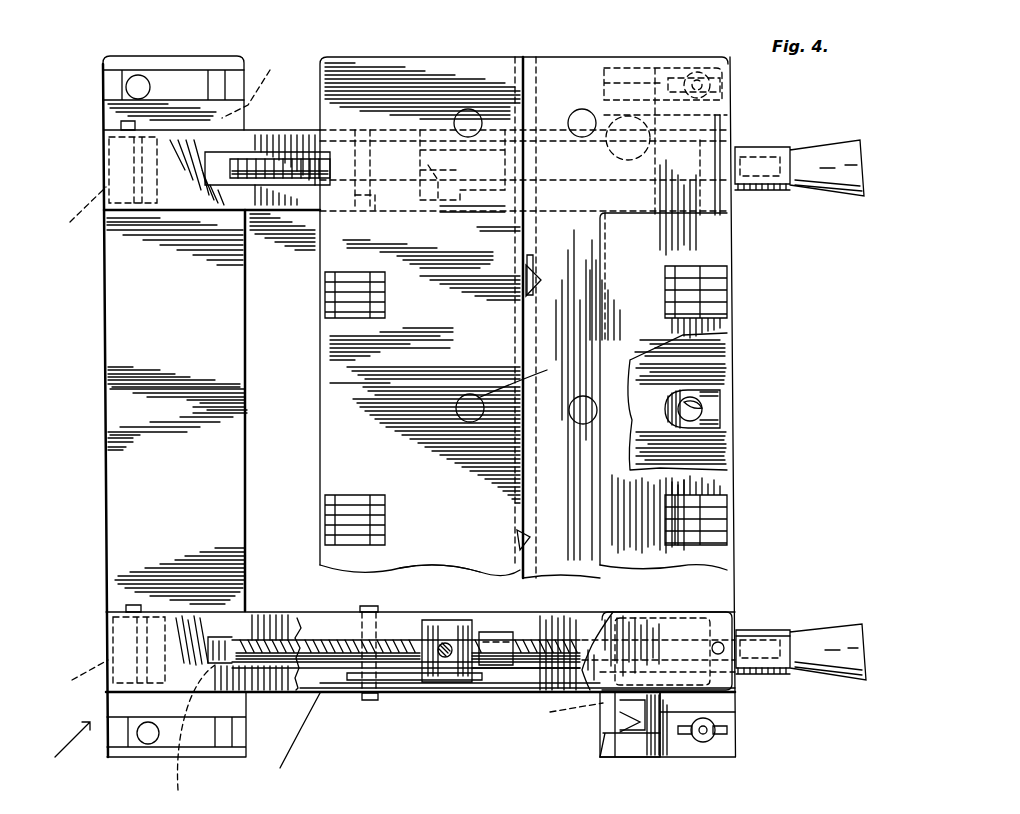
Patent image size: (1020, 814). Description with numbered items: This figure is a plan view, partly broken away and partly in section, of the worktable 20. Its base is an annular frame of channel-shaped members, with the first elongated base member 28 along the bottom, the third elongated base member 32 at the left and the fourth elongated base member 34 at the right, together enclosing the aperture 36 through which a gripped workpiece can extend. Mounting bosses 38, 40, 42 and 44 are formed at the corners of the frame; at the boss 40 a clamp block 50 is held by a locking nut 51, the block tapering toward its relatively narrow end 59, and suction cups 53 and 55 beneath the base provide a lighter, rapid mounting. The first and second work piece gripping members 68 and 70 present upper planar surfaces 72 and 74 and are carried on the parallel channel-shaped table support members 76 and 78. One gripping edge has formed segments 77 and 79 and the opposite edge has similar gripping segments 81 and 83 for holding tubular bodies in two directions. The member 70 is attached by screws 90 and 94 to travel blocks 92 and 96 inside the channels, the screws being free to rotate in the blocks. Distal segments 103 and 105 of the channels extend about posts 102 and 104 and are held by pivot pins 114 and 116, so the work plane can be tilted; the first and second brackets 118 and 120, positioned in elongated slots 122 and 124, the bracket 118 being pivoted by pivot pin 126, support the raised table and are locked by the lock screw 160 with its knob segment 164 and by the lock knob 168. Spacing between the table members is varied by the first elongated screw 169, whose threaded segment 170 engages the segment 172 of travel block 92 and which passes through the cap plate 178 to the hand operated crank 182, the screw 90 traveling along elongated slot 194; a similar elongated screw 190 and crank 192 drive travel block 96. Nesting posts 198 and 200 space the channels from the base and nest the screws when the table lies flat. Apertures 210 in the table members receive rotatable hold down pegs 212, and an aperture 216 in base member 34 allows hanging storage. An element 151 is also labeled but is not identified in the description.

The worktable 20 is at (62, 788).
The first elongated base member 28 is at (336, 700).
The third elongated base member 32 is at (118, 497).
The fourth elongated base member 34 is at (740, 467).
The enclosed aperture 36 is at (292, 376).
The mounting boss 38 is at (128, 757).
The mounting boss 40 is at (735, 757).
The mounting boss 42 is at (105, 57).
The mounting boss 44 is at (733, 57).
The clamp block 50 is at (690, 745).
The locking nut 51 is at (740, 733).
The suction cup 53 is at (672, 100).
The suction cup 55 is at (234, 425).
The narrow end 59 is at (602, 722).
The first work piece gripping member 68 is at (565, 57).
The second work piece gripping member 70 is at (410, 57).
The upper planar surface 72 is at (668, 282).
The upper planar surface 74 is at (440, 360).
The first table support member 76 is at (262, 612).
The formed segment 77 is at (508, 532).
The second table support member 78 is at (291, 135).
The formed segment 79 is at (500, 574).
The gripping segment 81 is at (538, 326).
The gripping segment 83 is at (540, 278).
The screw 90 is at (447, 643).
The travel block 92 is at (455, 682).
The screw 94 is at (438, 200).
The travel block 96 is at (460, 222).
The post 102 is at (73, 679).
The distal segment 103 is at (108, 637).
The post 104 is at (73, 209).
The distal segment 105 is at (106, 148).
The pivot pin 114 is at (128, 606).
The pivot pin 116 is at (123, 122).
The first bracket 118 is at (410, 681).
The second bracket 120 is at (402, 130).
The elongated slot 122 is at (368, 700).
The elongated slot 124 is at (340, 122).
The pivot pin 126 is at (368, 606).
The slot 151 is at (372, 214).
The lock screw 160 is at (610, 766).
The knob segment 164 is at (655, 758).
The lock knob 168 is at (662, 68).
The first elongated screw 169 is at (294, 738).
The threaded segment 170 is at (312, 640).
The segment of travel block 172 is at (500, 632).
The cap plate 178 is at (745, 620).
The hand operated crank 182 is at (795, 675).
The elongated screw 190 is at (300, 180).
The crank 192 is at (770, 147).
The elongated slot 194 is at (222, 640).
The nesting post 198 is at (680, 612).
The nesting post 200 is at (634, 200).
The apertures 210 is at (577, 403).
The hold down pegs 212 is at (325, 296).
The aperture 216 is at (715, 406).